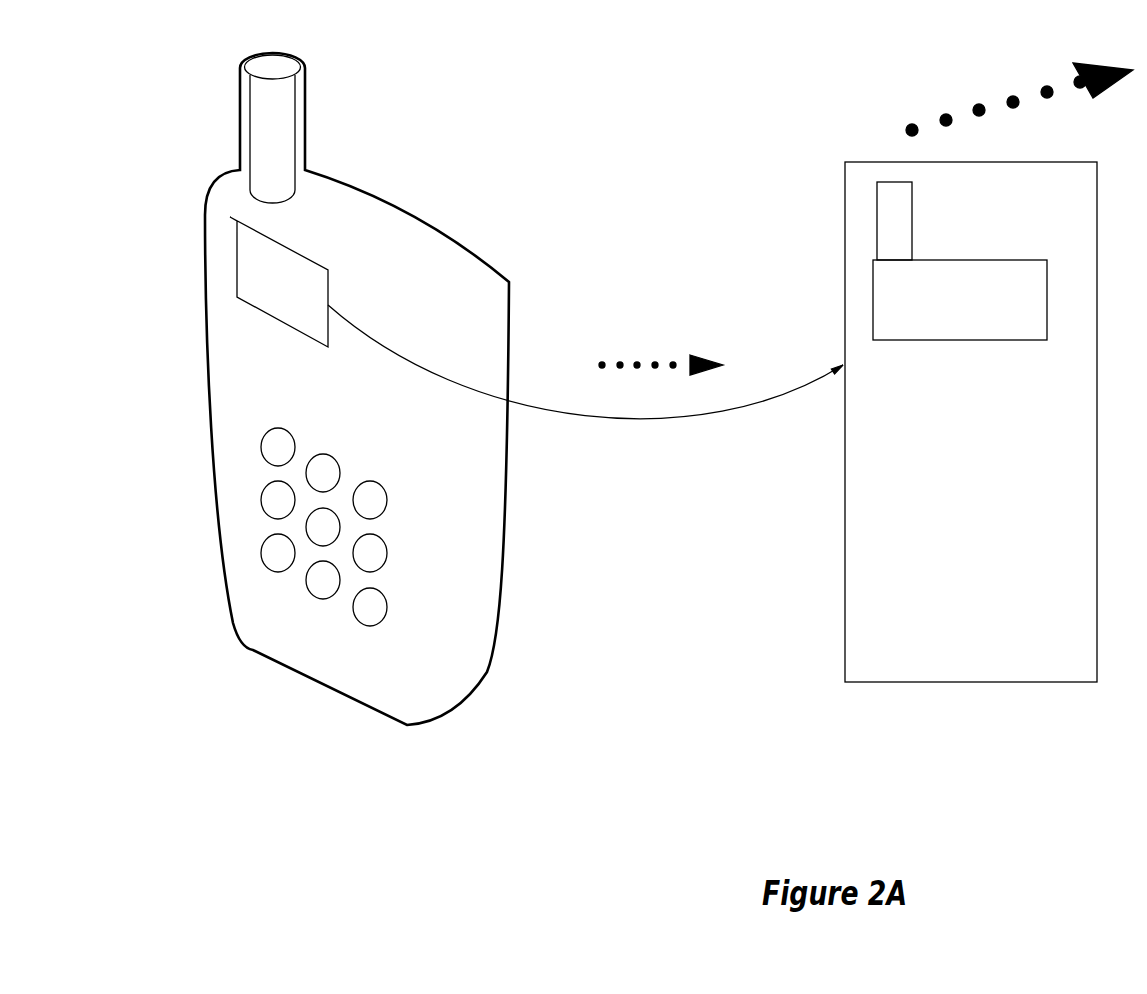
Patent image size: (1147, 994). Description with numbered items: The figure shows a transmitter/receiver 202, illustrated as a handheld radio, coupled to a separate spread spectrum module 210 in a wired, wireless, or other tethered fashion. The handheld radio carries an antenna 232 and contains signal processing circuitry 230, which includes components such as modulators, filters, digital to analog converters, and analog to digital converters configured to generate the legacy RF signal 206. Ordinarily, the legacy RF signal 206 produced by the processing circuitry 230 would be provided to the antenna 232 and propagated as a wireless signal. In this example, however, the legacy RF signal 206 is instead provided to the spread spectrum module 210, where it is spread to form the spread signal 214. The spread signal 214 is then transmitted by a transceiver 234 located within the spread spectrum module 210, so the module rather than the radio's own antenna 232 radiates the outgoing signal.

The transmitter/receiver 202 is at (429, 683).
The antenna 232 is at (292, 140).
The signal processing circuitry 230 is at (302, 296).
The legacy RF signal 206 is at (623, 363).
The spread spectrum module 210 is at (989, 655).
The transceiver 234 is at (956, 335).
The spread signal 214 is at (982, 112).